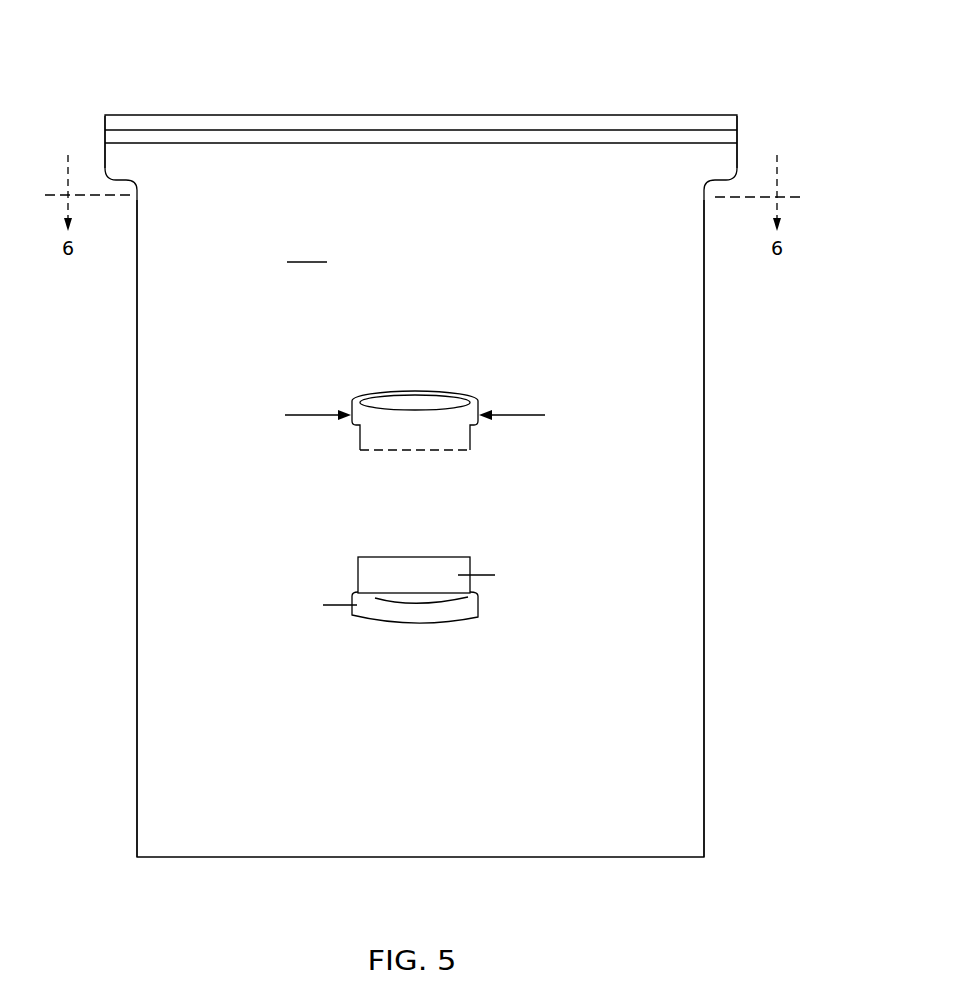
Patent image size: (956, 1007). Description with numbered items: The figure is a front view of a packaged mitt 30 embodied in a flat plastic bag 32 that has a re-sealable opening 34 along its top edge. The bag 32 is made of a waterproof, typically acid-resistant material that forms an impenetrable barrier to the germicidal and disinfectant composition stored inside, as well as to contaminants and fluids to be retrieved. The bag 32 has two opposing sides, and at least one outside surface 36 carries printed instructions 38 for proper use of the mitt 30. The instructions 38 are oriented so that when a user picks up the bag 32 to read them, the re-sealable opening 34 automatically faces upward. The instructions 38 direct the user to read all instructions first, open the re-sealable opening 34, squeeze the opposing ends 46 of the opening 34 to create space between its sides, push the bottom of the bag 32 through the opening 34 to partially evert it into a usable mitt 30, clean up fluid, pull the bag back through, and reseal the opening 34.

The packaged mitt 30 is at (222, 55).
The plastic bag 32 is at (137, 457).
The re-sealable opening 34 is at (583, 115).
The outside surface 36 is at (690, 350).
The instructions 38 is at (430, 498).
The opposing ends 46 is at (105, 137).